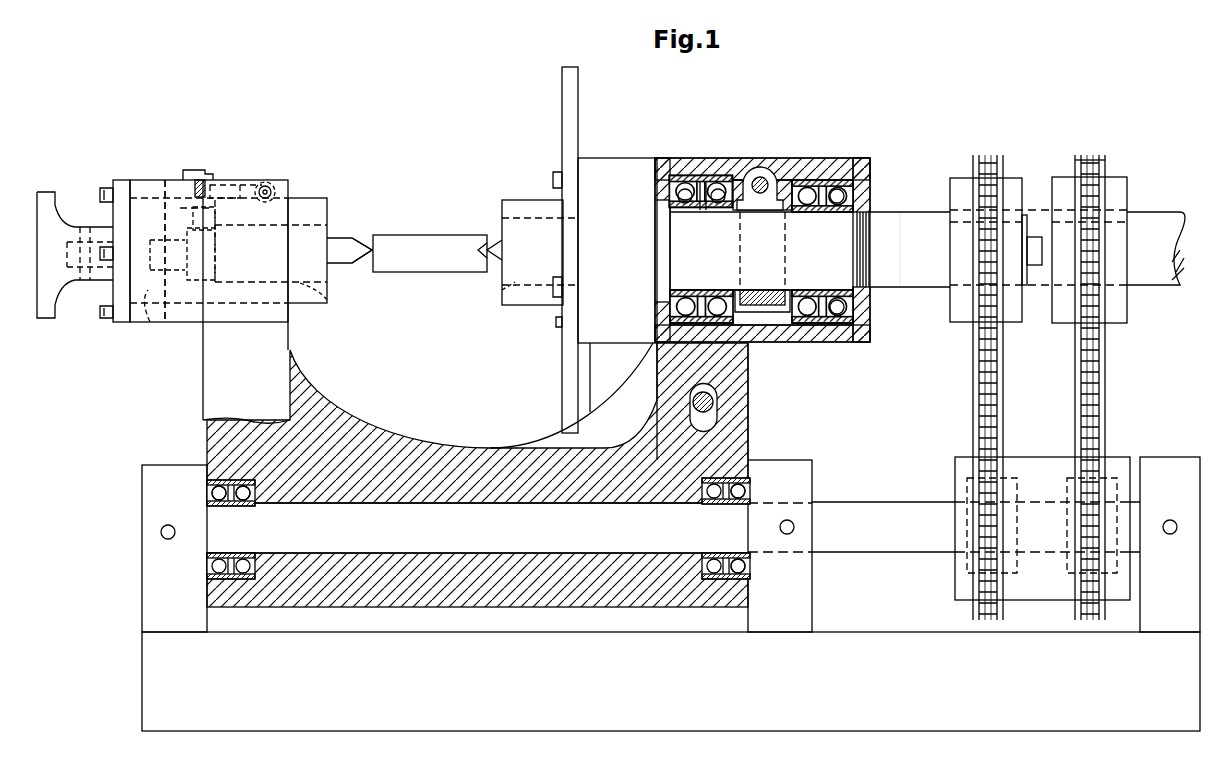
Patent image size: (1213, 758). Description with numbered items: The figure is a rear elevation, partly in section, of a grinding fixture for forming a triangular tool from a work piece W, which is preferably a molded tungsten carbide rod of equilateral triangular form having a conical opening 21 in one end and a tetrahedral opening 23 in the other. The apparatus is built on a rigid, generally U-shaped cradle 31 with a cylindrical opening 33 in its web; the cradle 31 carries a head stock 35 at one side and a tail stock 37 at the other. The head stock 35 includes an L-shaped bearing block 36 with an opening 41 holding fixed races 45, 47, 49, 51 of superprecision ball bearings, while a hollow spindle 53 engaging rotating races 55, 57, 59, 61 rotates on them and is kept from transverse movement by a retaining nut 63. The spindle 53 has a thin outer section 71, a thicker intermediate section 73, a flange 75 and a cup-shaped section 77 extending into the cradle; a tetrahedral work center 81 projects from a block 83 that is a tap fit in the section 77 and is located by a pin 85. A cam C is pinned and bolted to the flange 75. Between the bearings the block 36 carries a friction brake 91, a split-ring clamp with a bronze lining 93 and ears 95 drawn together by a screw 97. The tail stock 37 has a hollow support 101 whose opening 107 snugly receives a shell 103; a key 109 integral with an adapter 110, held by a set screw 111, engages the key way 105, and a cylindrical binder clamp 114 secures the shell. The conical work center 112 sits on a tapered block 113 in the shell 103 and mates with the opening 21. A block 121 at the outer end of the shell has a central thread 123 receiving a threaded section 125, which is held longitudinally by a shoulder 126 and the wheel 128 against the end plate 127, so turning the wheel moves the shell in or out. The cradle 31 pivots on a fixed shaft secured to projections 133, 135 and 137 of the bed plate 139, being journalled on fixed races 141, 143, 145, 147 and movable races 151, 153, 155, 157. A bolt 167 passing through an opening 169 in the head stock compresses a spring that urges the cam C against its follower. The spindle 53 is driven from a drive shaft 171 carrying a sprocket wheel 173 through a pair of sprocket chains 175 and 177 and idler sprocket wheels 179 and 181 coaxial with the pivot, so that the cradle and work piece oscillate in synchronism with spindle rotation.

The conical opening 21 is at (378, 240).
The tetrahedral opening 23 is at (480, 240).
The cradle 31 is at (300, 420).
The cylindrical opening 33 is at (636, 505).
The head stock 35 is at (770, 269).
The bearing block 36 is at (748, 343).
The tail stock 37 is at (228, 251).
The opening 41 is at (660, 186).
The fixed race 45 is at (684, 186).
The fixed race 47 is at (710, 186).
The fixed race 49 is at (797, 186).
The fixed race 51 is at (824, 186).
The spindle 53 is at (910, 249).
The rotating race 55 is at (684, 212).
The rotating race 57 is at (706, 212).
The rotating race 59 is at (800, 292).
The rotating race 61 is at (832, 292).
The retaining nut 63 is at (868, 172).
The thin section 71 is at (918, 282).
The intermediate thicker section 73 is at (862, 245).
The flange 75 is at (606, 162).
The cup shaped section 77 is at (522, 202).
The work center 81 is at (495, 250).
The block 83 is at (502, 288).
The pin 85 is at (1034, 236).
The friction brake 91 is at (785, 216).
The lining 93 is at (776, 288).
The ears 95 is at (765, 170).
The screw 97 is at (760, 194).
The support 101 is at (206, 322).
The shell 103 is at (302, 303).
The key way 105 is at (165, 184).
The opening 107 is at (295, 205).
The key 109 is at (212, 218).
The adapter 110 is at (232, 183).
The set screw 111 is at (205, 172).
The work center 112 is at (345, 240).
The tapered block 113 is at (336, 284).
The cylindrical binder clamp 114 is at (272, 184).
The block 121 is at (155, 322).
The central thread 123 is at (199, 254).
The threaded section 125 is at (95, 268).
The shoulder 126 is at (118, 318).
The end plate 127 is at (125, 180).
The wheel 128 is at (45, 318).
The projection 133 is at (160, 628).
The projection 135 is at (800, 575).
The projection 137 is at (1172, 618).
The bed plate 139 is at (292, 645).
The fixed race 141 is at (207, 510).
The fixed race 143 is at (240, 510).
The fixed race 145 is at (706, 505).
The fixed race 147 is at (745, 505).
The movable race 151 is at (207, 485).
The movable race 153 is at (252, 500).
The movable race 155 is at (706, 558).
The movable race 157 is at (744, 560).
The bolt 167 is at (713, 400).
The opening 169 is at (690, 410).
The drive shaft 171 is at (1143, 215).
The sprocket wheel 173 is at (1106, 162).
The sprocket chain 175 is at (1106, 388).
The sprocket chain 177 is at (1000, 388).
The idler sprocket wheel 179 is at (1085, 490).
The idler sprocket wheel 181 is at (990, 490).
The cam C is at (571, 68).
The work piece W is at (420, 265).